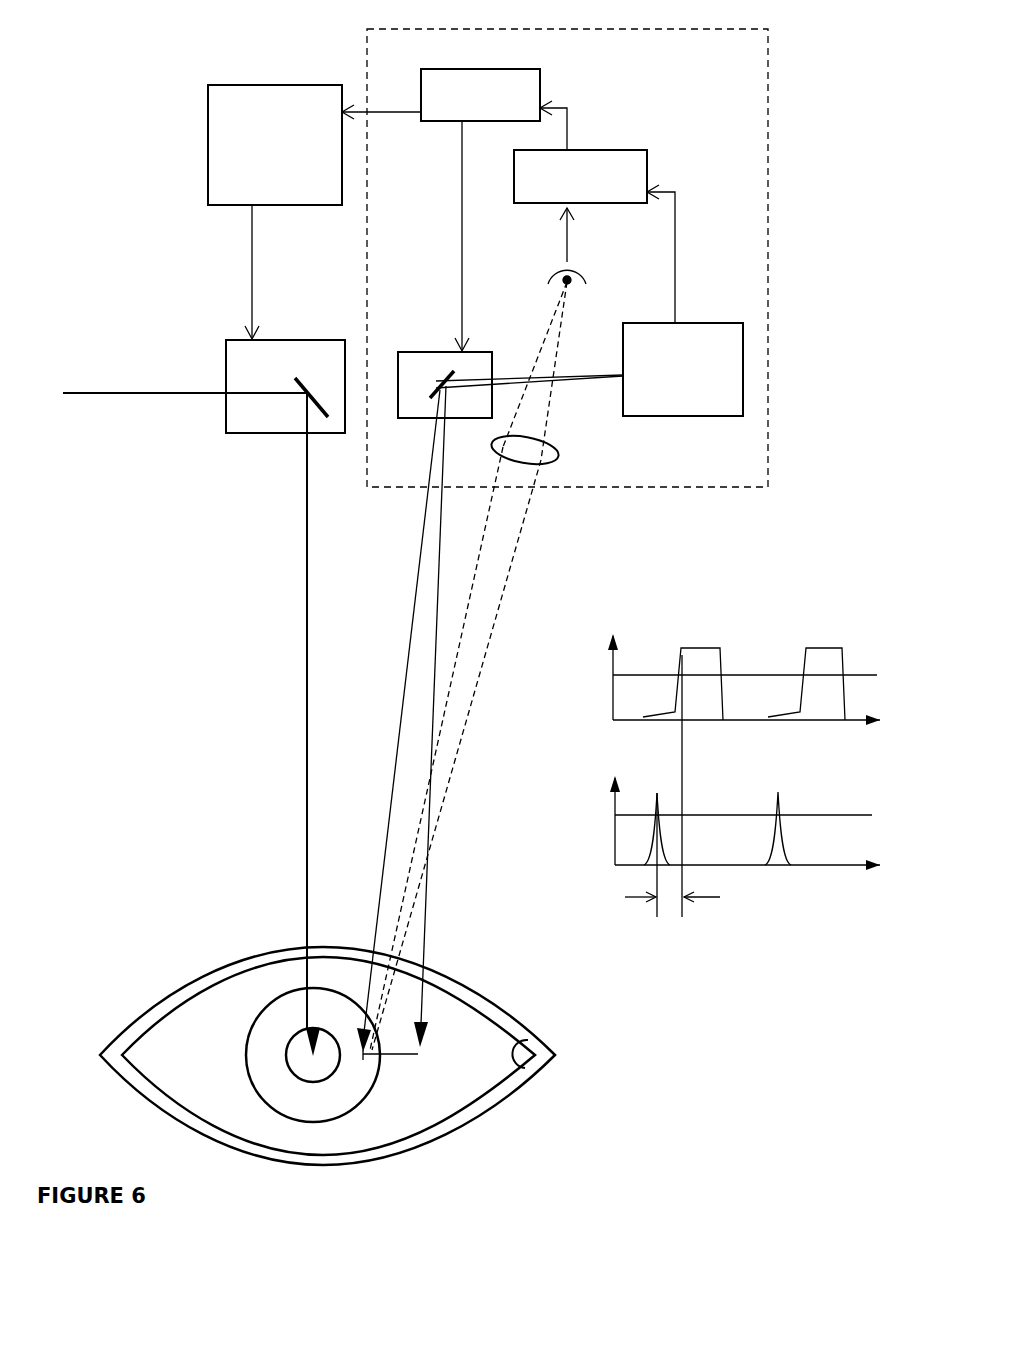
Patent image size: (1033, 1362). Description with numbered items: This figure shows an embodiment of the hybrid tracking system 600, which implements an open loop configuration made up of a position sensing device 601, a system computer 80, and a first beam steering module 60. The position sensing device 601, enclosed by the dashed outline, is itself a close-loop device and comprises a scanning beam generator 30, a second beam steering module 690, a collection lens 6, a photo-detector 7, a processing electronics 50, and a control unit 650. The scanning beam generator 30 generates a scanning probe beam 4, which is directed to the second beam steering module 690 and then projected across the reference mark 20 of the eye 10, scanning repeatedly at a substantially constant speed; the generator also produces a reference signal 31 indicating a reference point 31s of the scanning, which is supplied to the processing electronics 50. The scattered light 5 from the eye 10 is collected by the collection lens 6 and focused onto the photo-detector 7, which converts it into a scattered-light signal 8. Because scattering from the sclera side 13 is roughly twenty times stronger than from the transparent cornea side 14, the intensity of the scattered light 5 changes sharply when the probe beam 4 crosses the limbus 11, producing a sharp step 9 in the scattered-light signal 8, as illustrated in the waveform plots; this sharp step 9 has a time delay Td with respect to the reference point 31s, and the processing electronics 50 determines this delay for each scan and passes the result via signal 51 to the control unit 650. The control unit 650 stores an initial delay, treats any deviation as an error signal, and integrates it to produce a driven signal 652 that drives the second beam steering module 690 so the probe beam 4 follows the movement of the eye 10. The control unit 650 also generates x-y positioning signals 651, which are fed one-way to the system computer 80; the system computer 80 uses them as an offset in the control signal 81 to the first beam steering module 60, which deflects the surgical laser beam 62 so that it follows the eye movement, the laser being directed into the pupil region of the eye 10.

The hybrid tracking system 600 is at (150, 95).
The position sensing device 601 is at (764, 130).
The system computer 80 is at (317, 84).
The control signal 81 is at (244, 250).
The first beam steering module 60 is at (226, 357).
The surgical laser beam 62 is at (300, 612).
The control unit 650 is at (540, 80).
The x-y positioning signals 651 is at (410, 109).
The driven signal 652 is at (457, 215).
The processing electronics output 51 is at (572, 118).
The processing electronics 50 is at (648, 156).
The reference signal 31 is at (686, 207).
The scanning beam generator 30 is at (712, 323).
The second beam steering module 690 is at (430, 351).
The scanning probe beam 4 is at (425, 635).
The scattered-light signal 8 is at (567, 244).
The photo-detector 7 is at (583, 266).
The scattered light 5 is at (500, 618).
The collection lens 6 is at (560, 462).
The eye 10 is at (532, 955).
The limbus 11 is at (268, 1105).
The reference mark 20 is at (278, 995).
The cornea side 14 is at (360, 1070).
The sclera side 13 is at (400, 1078).
The sharp step 9 is at (680, 665).
The reference point 31s is at (655, 802).